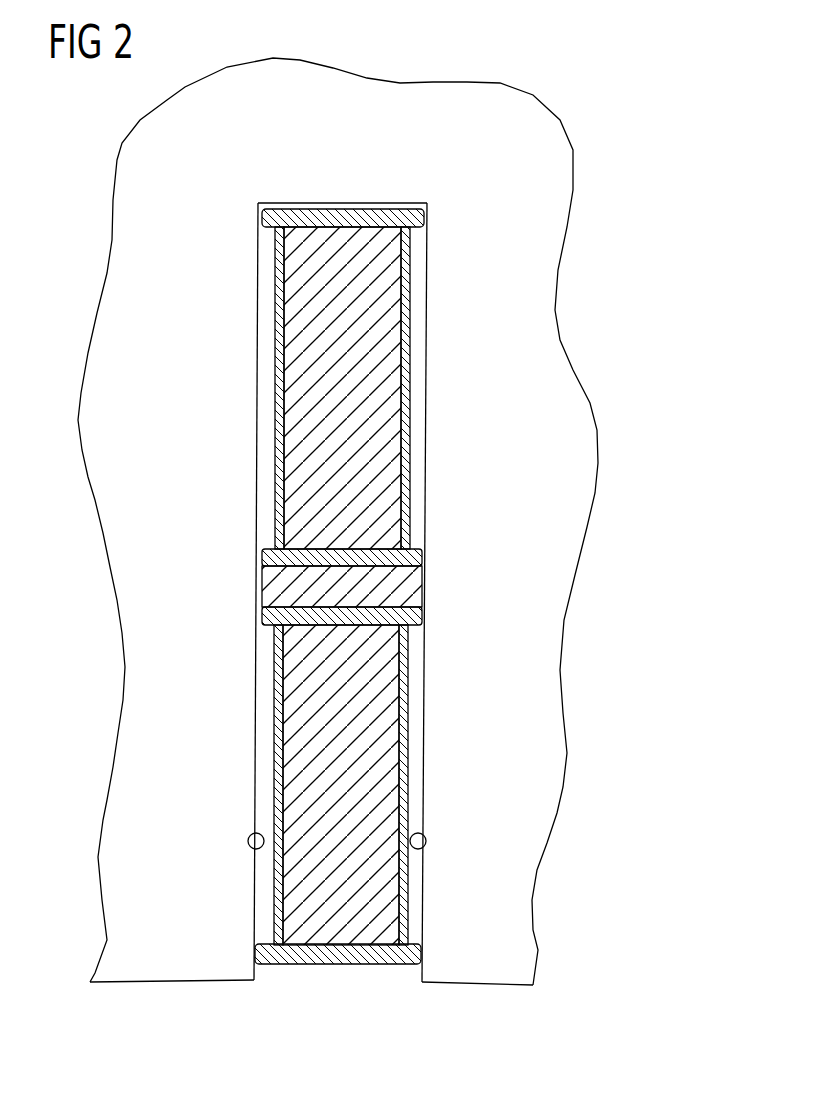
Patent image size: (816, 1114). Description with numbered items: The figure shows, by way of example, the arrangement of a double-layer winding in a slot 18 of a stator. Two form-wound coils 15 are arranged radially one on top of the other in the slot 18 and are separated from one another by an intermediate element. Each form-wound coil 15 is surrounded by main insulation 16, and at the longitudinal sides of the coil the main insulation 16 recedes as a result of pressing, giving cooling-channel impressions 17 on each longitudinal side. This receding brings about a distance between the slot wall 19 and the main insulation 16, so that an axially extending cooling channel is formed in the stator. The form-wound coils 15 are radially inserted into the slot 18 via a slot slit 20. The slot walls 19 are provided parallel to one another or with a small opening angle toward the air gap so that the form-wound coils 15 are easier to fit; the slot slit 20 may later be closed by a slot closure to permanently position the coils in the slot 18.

The form-wound coil 15 is at (367, 403).
The main insulation 16 is at (407, 447).
The cooling-channel impression 17 is at (405, 698).
The slot 18 is at (338, 1006).
The slot wall 19 is at (247, 834).
The slot slit 20 is at (334, 972).